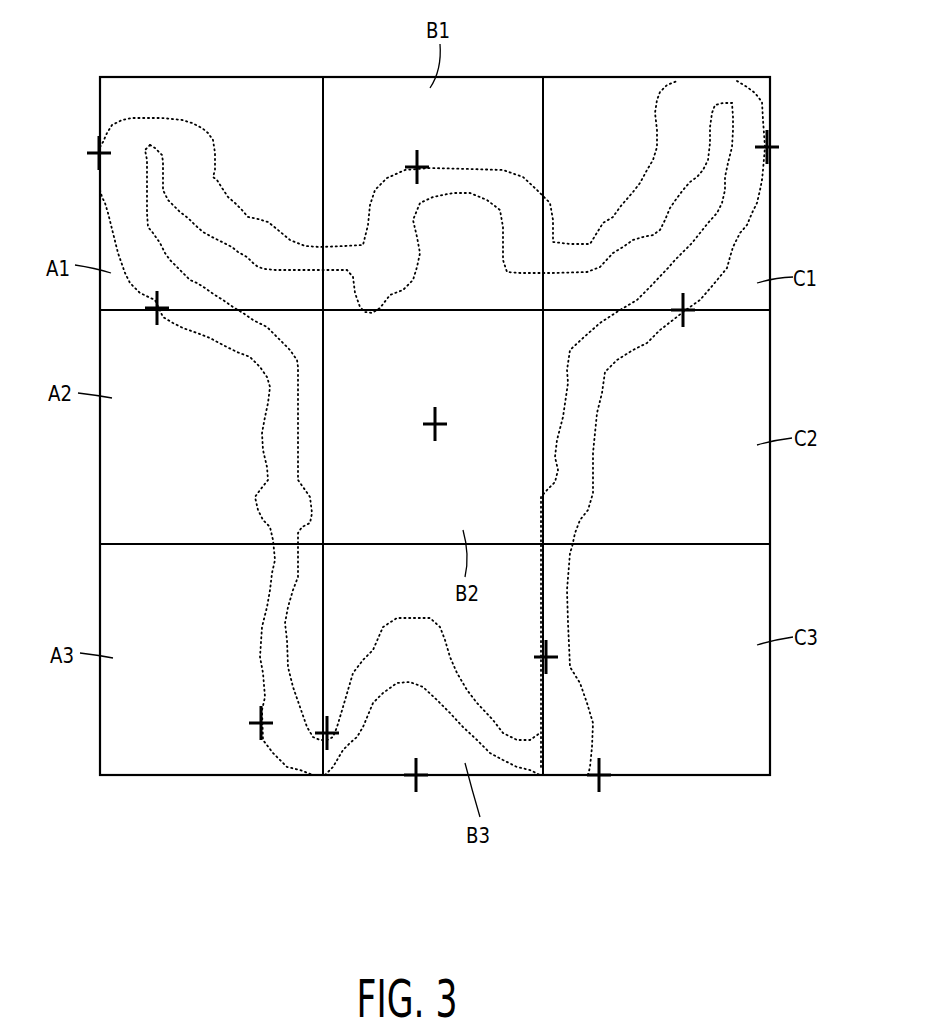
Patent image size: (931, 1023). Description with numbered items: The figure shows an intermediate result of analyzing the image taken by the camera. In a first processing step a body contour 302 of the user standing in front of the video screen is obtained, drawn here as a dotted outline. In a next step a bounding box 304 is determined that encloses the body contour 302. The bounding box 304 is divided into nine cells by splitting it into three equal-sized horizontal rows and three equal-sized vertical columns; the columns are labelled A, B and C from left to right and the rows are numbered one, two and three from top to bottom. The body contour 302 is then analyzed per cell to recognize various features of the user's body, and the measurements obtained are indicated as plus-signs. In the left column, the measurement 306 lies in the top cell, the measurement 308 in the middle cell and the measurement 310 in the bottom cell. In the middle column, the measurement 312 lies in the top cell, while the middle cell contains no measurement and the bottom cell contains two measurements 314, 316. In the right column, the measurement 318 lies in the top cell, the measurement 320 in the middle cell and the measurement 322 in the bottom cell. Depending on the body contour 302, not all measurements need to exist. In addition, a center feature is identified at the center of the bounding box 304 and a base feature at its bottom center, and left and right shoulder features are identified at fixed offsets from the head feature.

The body contour 302 is at (592, 470).
The bounding box 304 is at (773, 715).
The measurement in cell A1 306 is at (97, 153).
The measurement in cell A2 308 is at (155, 318).
The measurement in cell A3 310 is at (262, 733).
The measurement in cell B1 312 is at (415, 165).
The first measurement in cell B3 314 is at (553, 657).
The second measurement in cell B3 316 is at (325, 740).
The measurement in cell C1 318 is at (770, 145).
The measurement in cell C2 320 is at (684, 318).
The measurement in cell C3 322 is at (594, 780).